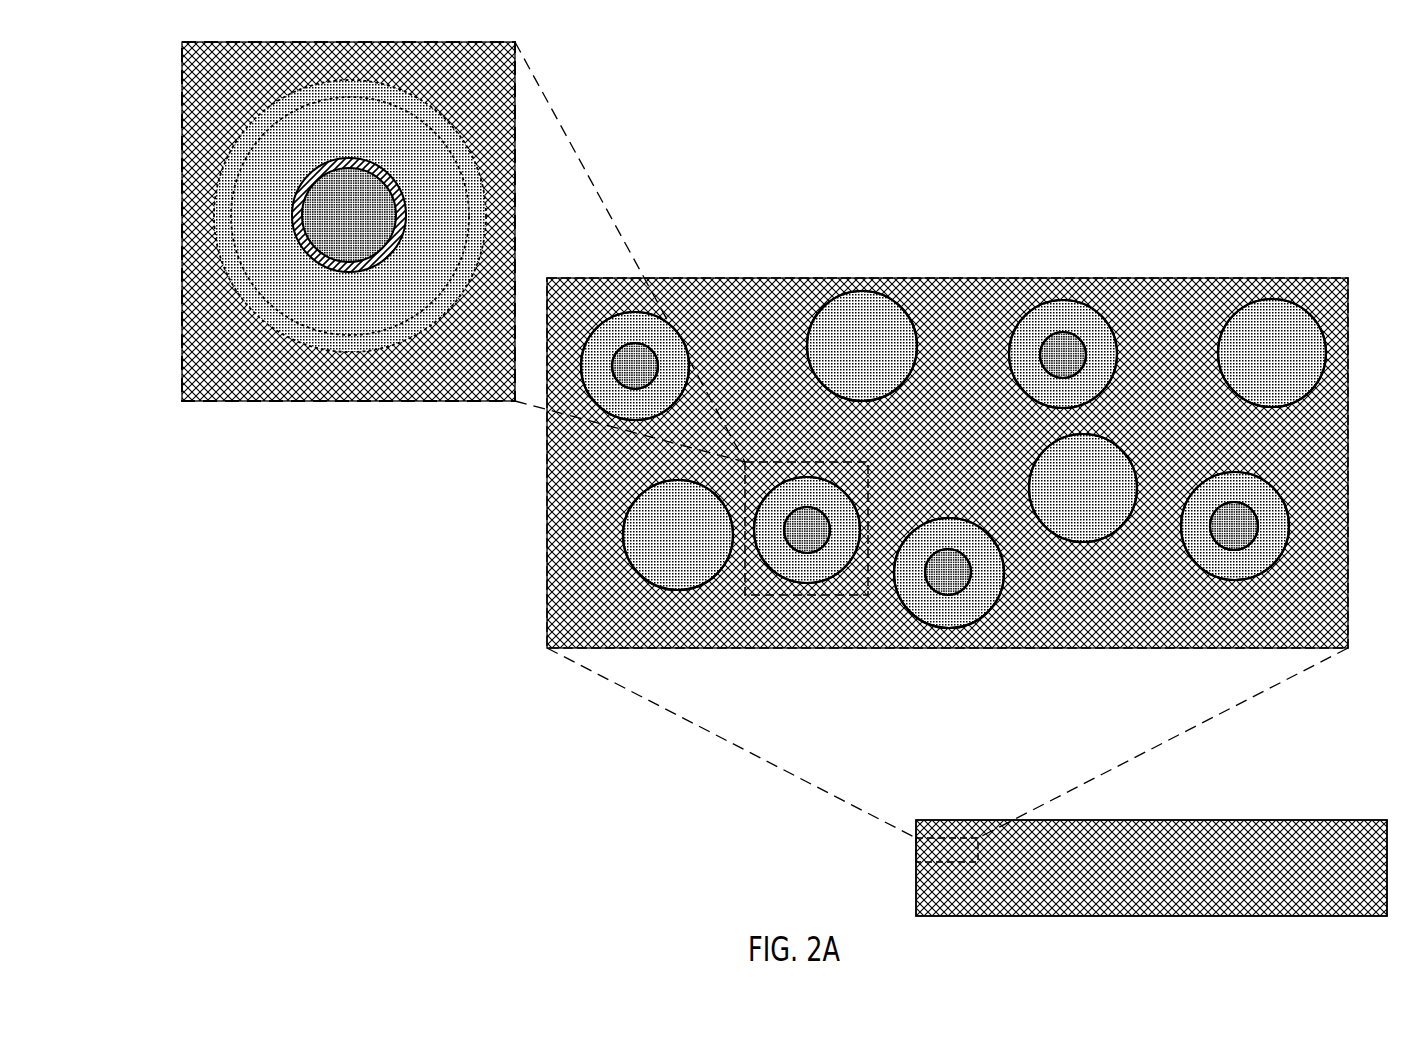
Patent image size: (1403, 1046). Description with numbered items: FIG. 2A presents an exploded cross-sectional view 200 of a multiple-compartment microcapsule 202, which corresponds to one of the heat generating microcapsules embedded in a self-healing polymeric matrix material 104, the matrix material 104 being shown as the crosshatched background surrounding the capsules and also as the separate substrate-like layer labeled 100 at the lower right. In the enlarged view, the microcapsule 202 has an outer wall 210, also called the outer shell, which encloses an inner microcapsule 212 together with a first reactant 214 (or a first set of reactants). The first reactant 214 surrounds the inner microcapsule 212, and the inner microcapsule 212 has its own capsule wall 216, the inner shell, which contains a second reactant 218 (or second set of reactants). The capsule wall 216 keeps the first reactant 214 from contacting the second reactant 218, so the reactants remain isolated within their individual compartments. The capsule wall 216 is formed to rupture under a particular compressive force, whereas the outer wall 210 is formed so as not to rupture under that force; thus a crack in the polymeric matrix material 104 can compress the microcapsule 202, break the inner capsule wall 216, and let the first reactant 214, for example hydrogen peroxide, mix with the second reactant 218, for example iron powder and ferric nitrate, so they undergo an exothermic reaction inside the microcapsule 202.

The substrate 100 is at (1272, 790).
The self-healing polymeric matrix material 104 is at (1332, 635).
The exploded cross-sectional view 200 is at (916, 358).
The multiple-compartment microcapsule 202 is at (348, 221).
The outer wall 210 is at (255, 137).
The inner microcapsule 212 is at (348, 150).
The first reactant 214 is at (414, 300).
The capsule wall 216 is at (387, 173).
The second reactant 218 is at (363, 226).